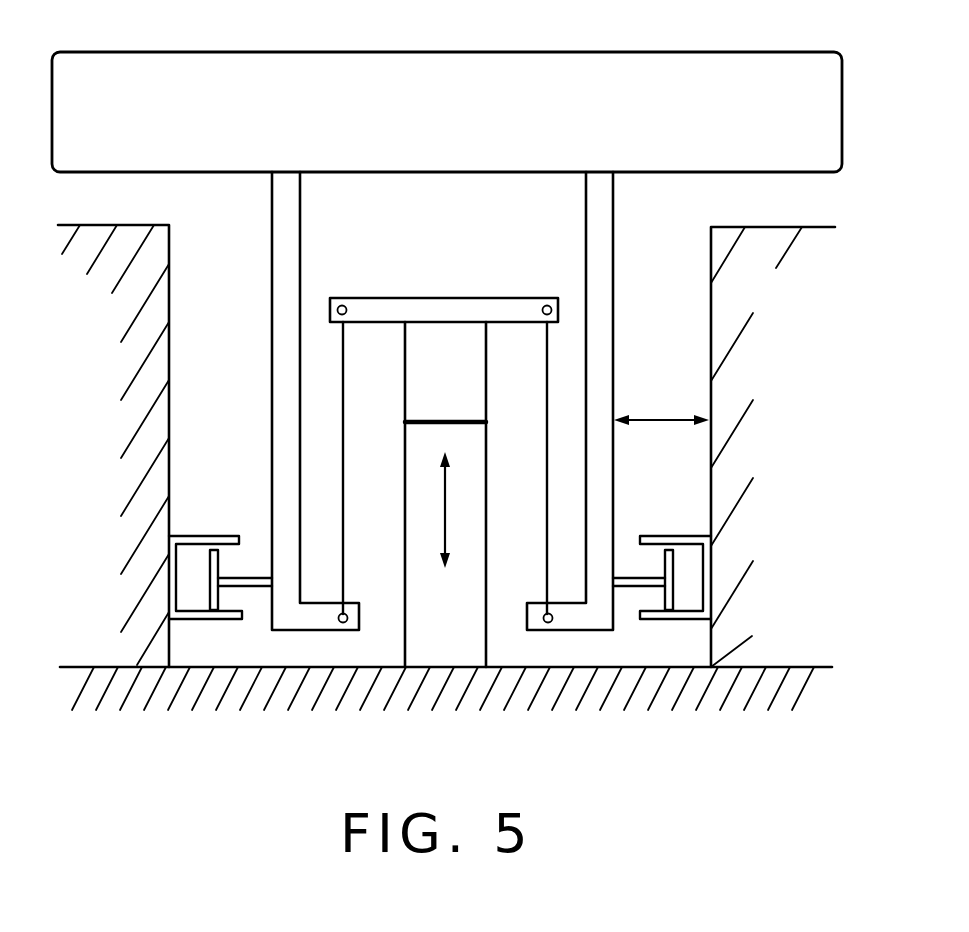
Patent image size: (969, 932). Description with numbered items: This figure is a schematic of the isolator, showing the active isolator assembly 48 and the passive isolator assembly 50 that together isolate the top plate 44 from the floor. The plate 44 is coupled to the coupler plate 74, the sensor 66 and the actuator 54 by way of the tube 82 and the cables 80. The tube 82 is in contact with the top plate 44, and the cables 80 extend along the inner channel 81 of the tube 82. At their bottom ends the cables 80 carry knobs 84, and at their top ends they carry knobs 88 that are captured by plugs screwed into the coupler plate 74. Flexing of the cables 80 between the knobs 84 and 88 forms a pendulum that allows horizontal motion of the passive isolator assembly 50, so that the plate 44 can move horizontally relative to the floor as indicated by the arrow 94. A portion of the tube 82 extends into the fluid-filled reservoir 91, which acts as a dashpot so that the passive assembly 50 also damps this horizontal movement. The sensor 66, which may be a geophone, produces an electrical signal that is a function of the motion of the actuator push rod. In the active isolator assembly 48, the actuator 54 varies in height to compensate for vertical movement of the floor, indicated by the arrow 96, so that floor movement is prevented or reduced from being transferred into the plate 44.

The top plate 44 is at (637, 70).
The active isolator assembly 48 is at (497, 642).
The passive isolator assembly 50 is at (560, 489).
The actuator 54 is at (422, 622).
The sensor 66 is at (445, 393).
The coupler plate 74 is at (437, 310).
The cables 80 is at (343, 362).
The inner channel 81 is at (368, 508).
The tube 82 is at (613, 283).
The knobs 84 is at (343, 304).
The knobs 88 is at (343, 622).
The reservoir 91 is at (690, 593).
The arrow 94 is at (654, 418).
The arrow 96 is at (445, 507).